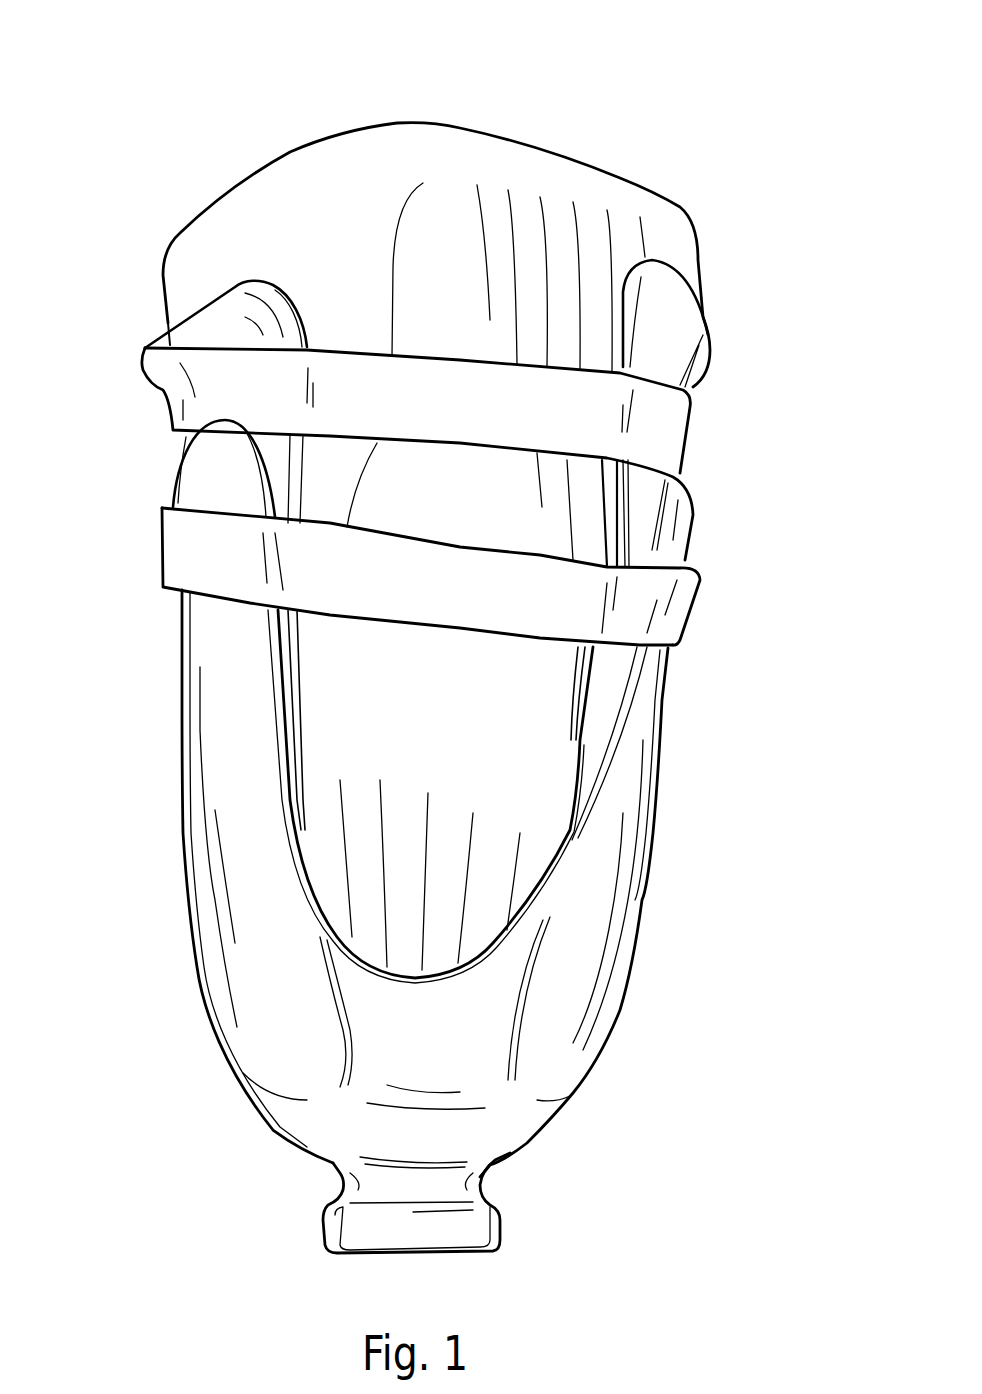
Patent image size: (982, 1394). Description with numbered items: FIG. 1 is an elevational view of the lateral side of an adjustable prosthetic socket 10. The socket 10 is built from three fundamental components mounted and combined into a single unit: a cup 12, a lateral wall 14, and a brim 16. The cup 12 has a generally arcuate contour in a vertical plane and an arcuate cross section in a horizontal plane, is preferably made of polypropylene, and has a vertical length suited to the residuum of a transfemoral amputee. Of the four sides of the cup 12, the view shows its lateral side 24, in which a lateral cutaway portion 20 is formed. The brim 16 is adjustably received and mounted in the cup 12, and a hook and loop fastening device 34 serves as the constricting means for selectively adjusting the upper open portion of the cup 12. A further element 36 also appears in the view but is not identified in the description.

The adjustable prosthetic socket 10 is at (593, 90).
The cup 12 is at (660, 727).
The lateral wall 14 is at (680, 207).
The brim 16 is at (707, 330).
The lateral cutaway portion 20 is at (520, 933).
The lateral side 24 is at (413, 1093).
The hook and loop fastening device 34 is at (180, 557).
The strap loop 36 is at (170, 386).